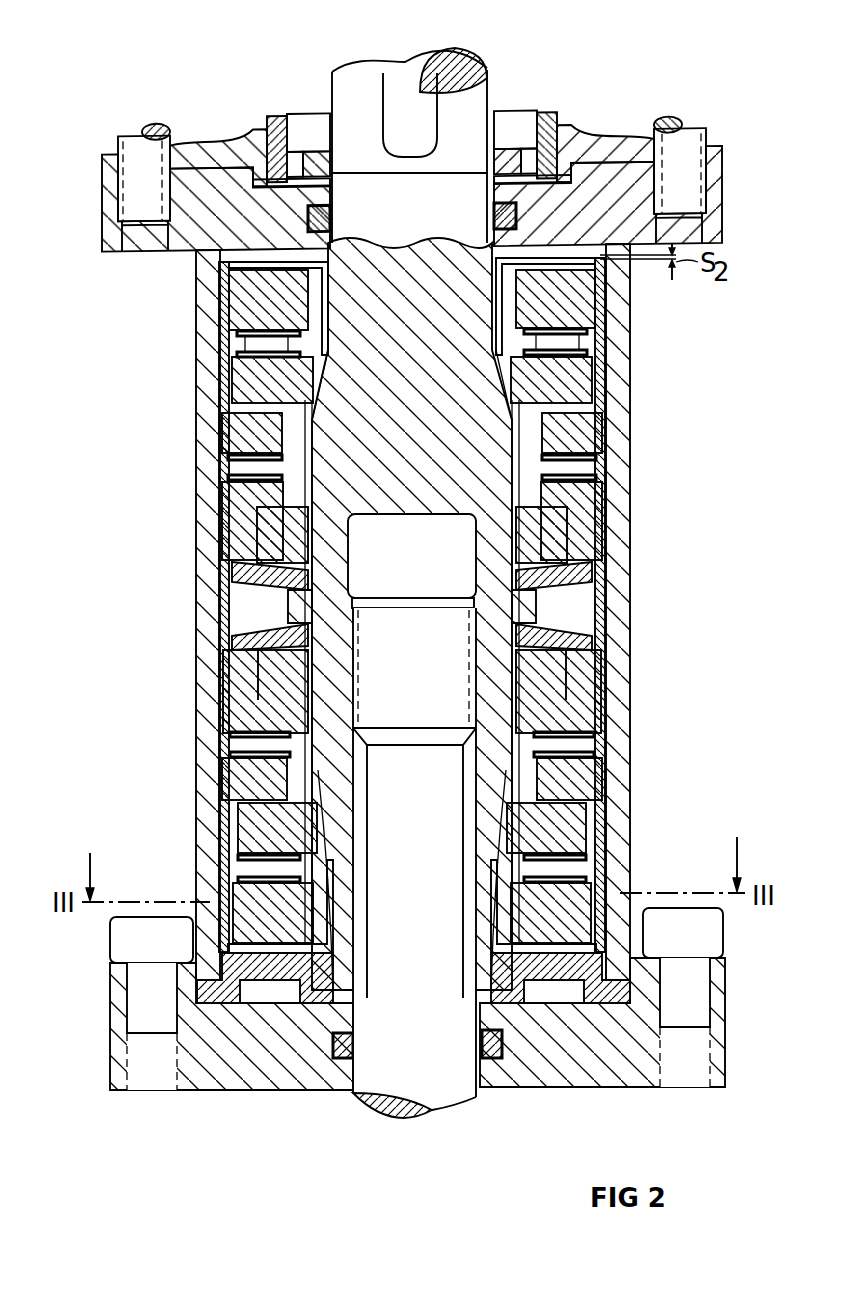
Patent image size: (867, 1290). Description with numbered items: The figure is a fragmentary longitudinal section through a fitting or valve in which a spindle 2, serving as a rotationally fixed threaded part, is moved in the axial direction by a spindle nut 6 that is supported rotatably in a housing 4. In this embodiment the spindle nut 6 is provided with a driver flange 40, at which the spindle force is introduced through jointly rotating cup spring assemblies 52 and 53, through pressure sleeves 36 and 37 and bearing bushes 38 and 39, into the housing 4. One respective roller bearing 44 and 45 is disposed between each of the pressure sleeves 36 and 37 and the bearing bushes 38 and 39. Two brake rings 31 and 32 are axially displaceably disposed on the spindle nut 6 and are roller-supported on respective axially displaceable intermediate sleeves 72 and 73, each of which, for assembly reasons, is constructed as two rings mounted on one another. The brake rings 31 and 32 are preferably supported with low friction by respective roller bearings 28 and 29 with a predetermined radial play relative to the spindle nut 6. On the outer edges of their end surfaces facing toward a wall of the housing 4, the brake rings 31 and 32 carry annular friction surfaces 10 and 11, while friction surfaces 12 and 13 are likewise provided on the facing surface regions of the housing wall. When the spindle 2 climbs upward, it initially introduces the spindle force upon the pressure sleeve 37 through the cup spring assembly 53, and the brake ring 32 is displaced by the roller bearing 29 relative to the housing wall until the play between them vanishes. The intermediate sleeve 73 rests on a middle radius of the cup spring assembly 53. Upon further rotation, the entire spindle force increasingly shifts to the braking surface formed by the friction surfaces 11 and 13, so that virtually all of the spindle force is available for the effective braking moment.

The spindle 2 is at (452, 1093).
The housing 4 is at (622, 474).
The spindle nut 6 is at (363, 87).
The annular friction surface 10 is at (228, 932).
The annular friction surface 11 is at (222, 290).
The friction surface 12 is at (228, 1003).
The friction surface 13 is at (218, 263).
The roller bearing 28 is at (570, 861).
The roller bearing 29 is at (563, 340).
The brake ring 31 is at (250, 896).
The brake ring 32 is at (586, 292).
The pressure sleeve 36 is at (253, 690).
The pressure sleeve 37 is at (240, 522).
The bearing bush 38 is at (597, 771).
The bearing bush 39 is at (593, 432).
The driver flange 40 is at (298, 604).
The roller bearing 44 is at (250, 743).
The roller bearing 45 is at (258, 468).
The cup spring assembly 52 is at (590, 637).
The cup spring assembly 53 is at (580, 573).
The intermediate sleeve 72 is at (553, 667).
The intermediate sleeve 73 is at (557, 535).